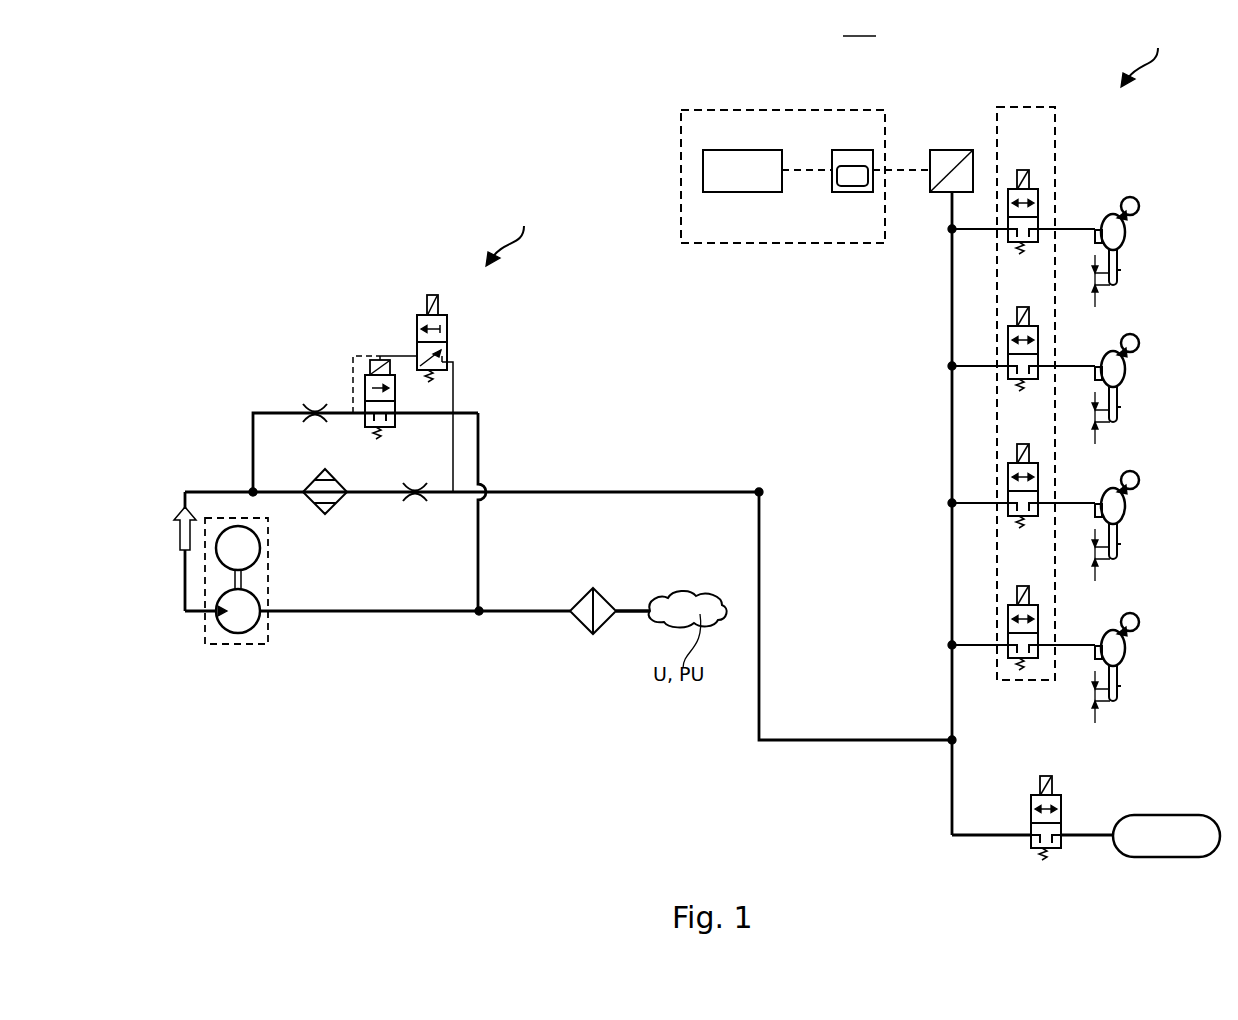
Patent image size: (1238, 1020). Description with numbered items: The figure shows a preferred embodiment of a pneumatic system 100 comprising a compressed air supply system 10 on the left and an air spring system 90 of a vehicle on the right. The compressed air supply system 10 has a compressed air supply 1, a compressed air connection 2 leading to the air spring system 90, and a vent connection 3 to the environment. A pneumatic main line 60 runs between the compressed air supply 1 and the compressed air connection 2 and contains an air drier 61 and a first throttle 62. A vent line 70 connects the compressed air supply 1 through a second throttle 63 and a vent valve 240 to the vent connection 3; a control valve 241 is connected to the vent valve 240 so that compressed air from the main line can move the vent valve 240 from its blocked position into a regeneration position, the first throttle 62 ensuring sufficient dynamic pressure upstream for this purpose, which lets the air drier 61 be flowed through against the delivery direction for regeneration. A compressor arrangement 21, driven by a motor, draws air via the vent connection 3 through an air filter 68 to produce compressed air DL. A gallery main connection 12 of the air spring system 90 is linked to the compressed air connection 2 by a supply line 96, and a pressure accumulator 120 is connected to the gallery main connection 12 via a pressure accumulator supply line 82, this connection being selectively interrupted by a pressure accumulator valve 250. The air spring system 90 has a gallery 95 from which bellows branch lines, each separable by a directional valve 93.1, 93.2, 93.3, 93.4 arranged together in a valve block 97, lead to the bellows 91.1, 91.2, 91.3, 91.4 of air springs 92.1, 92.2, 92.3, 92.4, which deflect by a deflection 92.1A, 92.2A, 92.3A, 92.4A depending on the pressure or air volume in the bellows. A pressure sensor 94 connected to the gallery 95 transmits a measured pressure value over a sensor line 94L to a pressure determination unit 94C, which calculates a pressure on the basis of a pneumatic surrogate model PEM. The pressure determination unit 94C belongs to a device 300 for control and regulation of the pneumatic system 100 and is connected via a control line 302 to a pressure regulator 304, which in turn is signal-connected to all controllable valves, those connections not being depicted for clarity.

The compressed air supply 1 is at (252, 489).
The compressed air connection 2 is at (758, 489).
The vent connection 3 is at (640, 606).
The compressed air supply system 10 is at (511, 234).
The gallery main connection 12 is at (955, 740).
The compressor arrangement 21 is at (252, 646).
The pneumatic main line 60 is at (343, 531).
The air drier 61 is at (353, 494).
The first throttle 62 is at (414, 502).
The second throttle 63 is at (312, 400).
The air filter 68 is at (602, 590).
The vent line 70 is at (478, 556).
The pressure accumulator supply line 82 is at (952, 825).
The air spring system 90 is at (1145, 55).
The bellows 91.1 is at (1127, 235).
The bellows 91.2 is at (1127, 372).
The bellows 91.3 is at (1127, 509).
The bellows 91.4 is at (1127, 651).
The air spring 92.1 is at (1134, 242).
The air spring 92.2 is at (1134, 379).
The air spring 92.3 is at (1134, 516).
The air spring 92.4 is at (1134, 658).
The deflection 92.1A is at (1095, 307).
The deflection 92.2A is at (1095, 444).
The deflection 92.3A is at (1095, 581).
The deflection 92.4A is at (1095, 723).
The directional valve 93.1 is at (1022, 170).
The directional valve 93.2 is at (1022, 307).
The directional valve 93.3 is at (1022, 444).
The directional valve 93.4 is at (1022, 586).
The pressure sensor 94 is at (952, 150).
The pressure determination unit 94C is at (843, 157).
The sensor line 94L is at (900, 170).
The gallery 95 is at (952, 563).
The supply line 96 is at (757, 556).
The valve block 97 is at (1055, 170).
The pneumatic system 100 is at (861, 25).
The pressure accumulator 120 is at (1160, 815).
The vent valve 240 is at (398, 430).
The control valve 241 is at (448, 335).
The pressure accumulator valve 250 is at (1046, 776).
The device for control and regulation 300 is at (681, 138).
The control line 302 is at (800, 170).
The pressure regulator 304 is at (725, 171).
The compressed air DL is at (176, 522).
The pneumatic surrogate model PEM is at (852, 185).